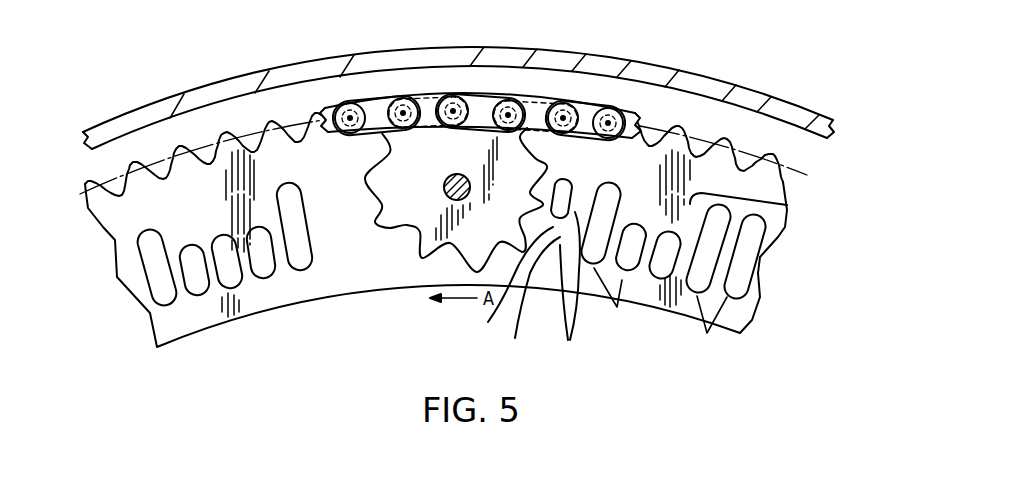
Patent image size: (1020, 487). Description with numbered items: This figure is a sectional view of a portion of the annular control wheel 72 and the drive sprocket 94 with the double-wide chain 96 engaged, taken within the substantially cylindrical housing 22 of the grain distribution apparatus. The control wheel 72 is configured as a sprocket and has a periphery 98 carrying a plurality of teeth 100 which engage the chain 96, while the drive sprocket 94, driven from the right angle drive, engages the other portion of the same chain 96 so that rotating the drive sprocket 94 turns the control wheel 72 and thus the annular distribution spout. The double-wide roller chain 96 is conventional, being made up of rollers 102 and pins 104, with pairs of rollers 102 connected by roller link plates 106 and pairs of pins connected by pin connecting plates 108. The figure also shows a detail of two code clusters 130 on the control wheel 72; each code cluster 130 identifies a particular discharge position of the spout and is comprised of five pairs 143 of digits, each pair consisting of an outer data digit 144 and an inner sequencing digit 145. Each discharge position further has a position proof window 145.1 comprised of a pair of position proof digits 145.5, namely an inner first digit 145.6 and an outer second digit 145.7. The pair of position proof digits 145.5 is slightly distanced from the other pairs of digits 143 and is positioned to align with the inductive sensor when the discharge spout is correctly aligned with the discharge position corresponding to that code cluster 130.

The housing 22 is at (168, 98).
The control wheel 72 is at (348, 273).
The drive sprocket 94 is at (420, 228).
The double-wide chain 96 is at (593, 97).
The periphery 98 is at (693, 137).
The teeth 100 is at (133, 163).
The rollers 102 is at (485, 77).
The pins 104 is at (350, 113).
The roller link plates 106 is at (417, 97).
The pin connecting plates 108 is at (467, 101).
The code clusters 130 is at (240, 292).
The pairs of digits 143 is at (655, 314).
The outer data digit 144 is at (783, 209).
The inner sequencing digit 145 is at (667, 240).
The position proof window 145.1 is at (490, 282).
The pair of position proof digits 145.5 is at (578, 289).
The inner first digit 145.6 is at (567, 187).
The outer second digit 145.7 is at (520, 297).